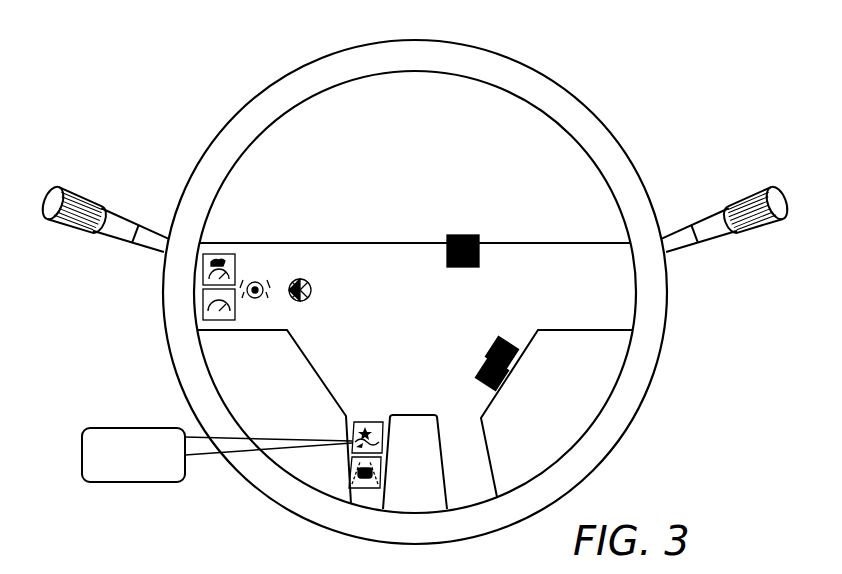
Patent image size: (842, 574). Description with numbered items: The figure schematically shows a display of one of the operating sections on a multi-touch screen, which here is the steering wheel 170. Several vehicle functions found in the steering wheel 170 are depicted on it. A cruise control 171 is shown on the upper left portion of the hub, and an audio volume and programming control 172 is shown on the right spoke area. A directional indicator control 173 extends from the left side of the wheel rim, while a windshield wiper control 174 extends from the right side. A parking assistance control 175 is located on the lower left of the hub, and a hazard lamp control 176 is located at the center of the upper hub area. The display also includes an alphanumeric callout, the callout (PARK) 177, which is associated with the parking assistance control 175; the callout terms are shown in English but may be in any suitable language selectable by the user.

The steering wheel 170 is at (628, 91).
The cruise control 171 is at (250, 273).
The audio volume and programming control 172 is at (503, 372).
The directional indicator control 173 is at (85, 195).
The windshield wiper control 174 is at (742, 193).
The parking assistance control 175 is at (346, 455).
The hazard lamp control 176 is at (460, 236).
The callout (PARK) 177 is at (130, 437).